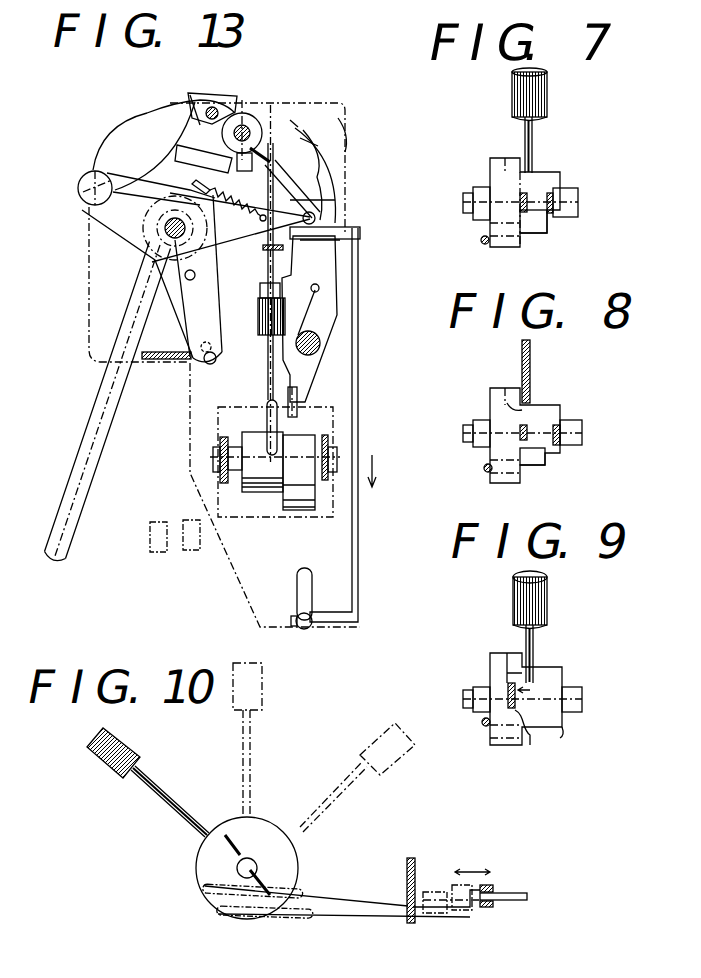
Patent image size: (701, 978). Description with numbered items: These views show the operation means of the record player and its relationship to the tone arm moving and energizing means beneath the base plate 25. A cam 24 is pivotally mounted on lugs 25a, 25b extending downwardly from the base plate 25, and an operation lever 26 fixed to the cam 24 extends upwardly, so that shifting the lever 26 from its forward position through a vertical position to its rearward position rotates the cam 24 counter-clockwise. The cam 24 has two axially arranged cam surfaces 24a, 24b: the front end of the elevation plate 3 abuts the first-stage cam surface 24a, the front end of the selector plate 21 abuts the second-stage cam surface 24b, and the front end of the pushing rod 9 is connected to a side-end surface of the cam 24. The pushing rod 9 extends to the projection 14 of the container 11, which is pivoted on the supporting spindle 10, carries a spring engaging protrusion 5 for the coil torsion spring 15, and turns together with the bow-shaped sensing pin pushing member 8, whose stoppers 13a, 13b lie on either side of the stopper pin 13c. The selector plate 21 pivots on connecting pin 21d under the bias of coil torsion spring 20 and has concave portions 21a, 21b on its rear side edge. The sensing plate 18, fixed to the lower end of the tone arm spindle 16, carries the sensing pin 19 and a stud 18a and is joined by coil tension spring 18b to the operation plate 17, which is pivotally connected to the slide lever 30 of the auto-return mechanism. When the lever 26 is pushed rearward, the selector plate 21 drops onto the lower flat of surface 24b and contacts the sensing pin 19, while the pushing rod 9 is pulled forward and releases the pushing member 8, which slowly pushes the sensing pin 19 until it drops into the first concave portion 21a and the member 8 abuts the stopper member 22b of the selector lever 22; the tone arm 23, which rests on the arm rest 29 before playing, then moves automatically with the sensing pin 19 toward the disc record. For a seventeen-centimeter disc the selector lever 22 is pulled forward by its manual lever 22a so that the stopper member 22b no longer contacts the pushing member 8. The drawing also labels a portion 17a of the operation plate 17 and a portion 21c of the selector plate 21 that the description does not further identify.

In FIG. 7, the elevation plate 3 is at (565, 215).
In FIG. 8, the elevation plate 3 is at (584, 432).
In FIG. 9, the elevation plate 3 is at (582, 700).
In FIG. 13, the spring engaging protrusion 5 is at (313, 143).
In FIG. 10, the spring engaging protrusion 5 is at (491, 890).
In FIG. 13, the sensing pin pushing member 8 is at (334, 162).
In FIG. 13, the pushing rod 9 is at (275, 140).
In FIG. 7, the pushing rod 9 is at (485, 244).
In FIG. 8, the pushing rod 9 is at (484, 471).
In FIG. 9, the pushing rod 9 is at (484, 726).
In FIG. 10, the pushing rod 9 is at (328, 920).
In FIG. 13, the supporting spindle 10 is at (300, 130).
In FIG. 13, the container 11 is at (258, 122).
In FIG. 13, the stopper 13a is at (198, 96).
In FIG. 13, the stopper 13b is at (250, 108).
In FIG. 13, the stopper pin 13c is at (216, 106).
In FIG. 13, the projection 14 is at (292, 120).
In FIG. 13, the coil torsion spring 15 is at (345, 127).
In FIG. 13, the tone arm spindle 16 is at (173, 223).
In FIG. 13, the operation plate 17 is at (130, 246).
In FIG. 13, the lever hole 17a is at (184, 276).
In FIG. 13, the sensing plate 18 is at (290, 262).
In FIG. 13, the stud 18a is at (80, 184).
In FIG. 13, the coil tension spring 18b is at (237, 215).
In FIG. 13, the sensing pin 19 is at (315, 214).
In FIG. 13, the coil torsion spring 20 is at (316, 320).
In FIG. 13, the selector plate 21 is at (320, 298).
In FIG. 7, the selector plate 21 is at (530, 232).
In FIG. 8, the selector plate 21 is at (540, 462).
In FIG. 9, the selector plate 21 is at (509, 685).
In FIG. 13, the first concave portion 21a is at (300, 198).
In FIG. 13, the concave portion 21b is at (340, 238).
In FIG. 13, the latch plate pin 21c is at (300, 283).
In FIG. 13, the connecting pin 21d is at (321, 343).
In FIG. 13, the selector lever 22 is at (359, 428).
In FIG. 13, the manual lever 22a is at (310, 628).
In FIG. 13, the stopper member 22b is at (312, 232).
In FIG. 13, the tone arm 23 is at (92, 478).
In FIG. 13, the cam 24 is at (315, 500).
In FIG. 7, the cam 24 is at (493, 165).
In FIG. 8, the cam 24 is at (497, 390).
In FIG. 9, the cam 24 is at (500, 655).
In FIG. 10, the cam 24 is at (298, 862).
In FIG. 13, the first-stage cam surface 24a is at (232, 425).
In FIG. 7, the first-stage cam surface 24a is at (555, 190).
In FIG. 8, the first-stage cam surface 24a is at (565, 450).
In FIG. 9, the first-stage cam surface 24a is at (564, 727).
In FIG. 13, the second-stage cam surface 24b is at (300, 428).
In FIG. 7, the second-stage cam surface 24b is at (530, 170).
In FIG. 8, the second-stage cam surface 24b is at (516, 405).
In FIG. 9, the second-stage cam surface 24b is at (530, 740).
In FIG. 13, the base plate 25 is at (120, 132).
In FIG. 13, the lug 25a is at (222, 446).
In FIG. 13, the lug 25b is at (328, 440).
In FIG. 13, the operation lever 26 is at (268, 378).
In FIG. 7, the operation lever 26 is at (532, 124).
In FIG. 8, the operation lever 26 is at (530, 354).
In FIG. 9, the operation lever 26 is at (534, 623).
In FIG. 10, the operation lever 26 is at (162, 790).
In FIG. 13, the arm rest 29 is at (162, 552).
In FIG. 13, the slide lever 30 is at (187, 362).